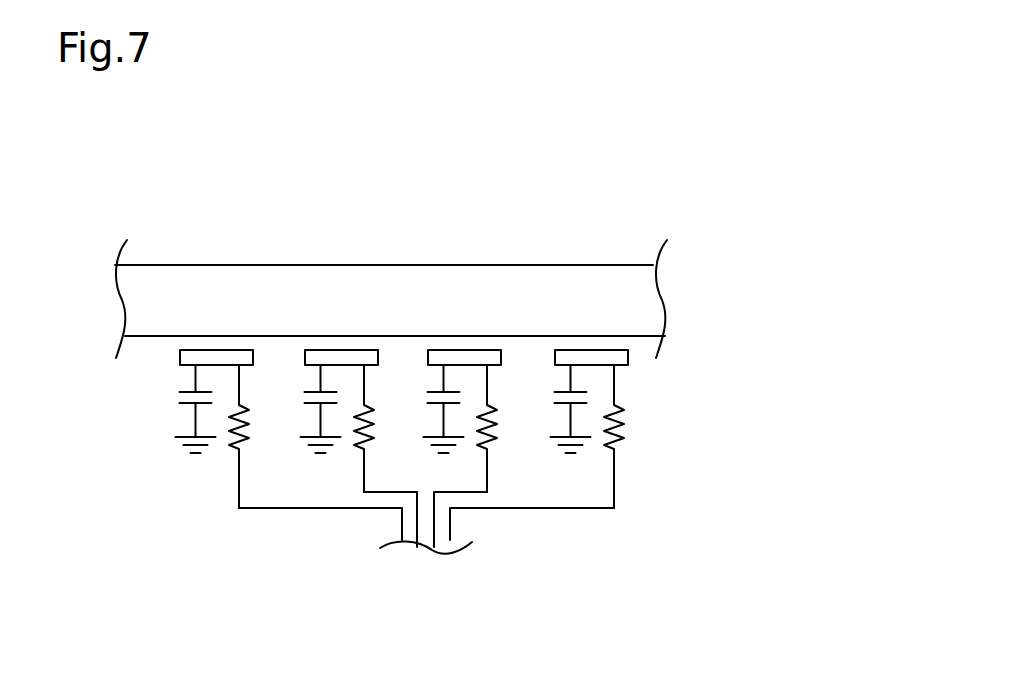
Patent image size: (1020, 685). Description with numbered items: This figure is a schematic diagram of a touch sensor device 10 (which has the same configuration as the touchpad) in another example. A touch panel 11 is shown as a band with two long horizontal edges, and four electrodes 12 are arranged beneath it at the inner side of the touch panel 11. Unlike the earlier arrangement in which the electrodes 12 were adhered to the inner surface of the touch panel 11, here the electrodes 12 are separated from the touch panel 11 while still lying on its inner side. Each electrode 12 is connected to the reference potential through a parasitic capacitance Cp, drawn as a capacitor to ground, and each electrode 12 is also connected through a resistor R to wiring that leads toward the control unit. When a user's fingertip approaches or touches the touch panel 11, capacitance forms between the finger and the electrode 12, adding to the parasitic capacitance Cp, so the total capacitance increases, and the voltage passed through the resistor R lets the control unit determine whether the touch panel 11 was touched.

The touch sensor device 10 is at (414, 272).
The touch panel 11 is at (267, 275).
The electrodes 12 is at (213, 355).
The parasitic capacitance Cp is at (367, 409).
The resistors R is at (440, 436).